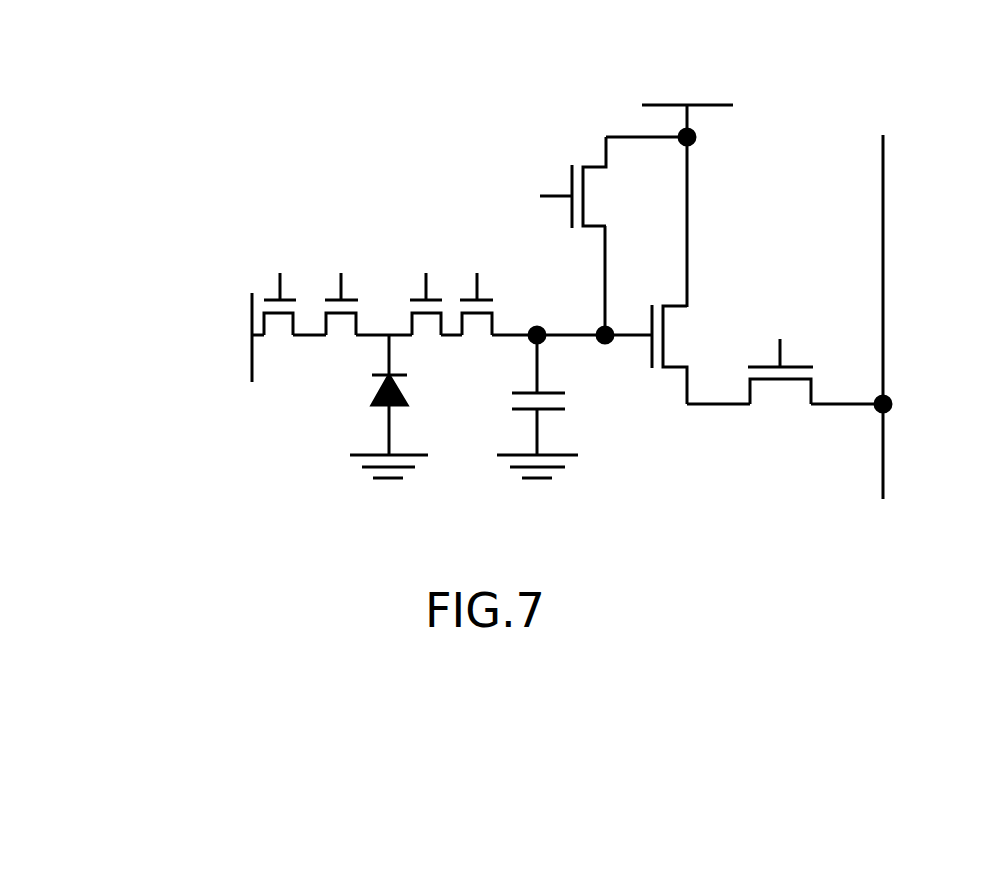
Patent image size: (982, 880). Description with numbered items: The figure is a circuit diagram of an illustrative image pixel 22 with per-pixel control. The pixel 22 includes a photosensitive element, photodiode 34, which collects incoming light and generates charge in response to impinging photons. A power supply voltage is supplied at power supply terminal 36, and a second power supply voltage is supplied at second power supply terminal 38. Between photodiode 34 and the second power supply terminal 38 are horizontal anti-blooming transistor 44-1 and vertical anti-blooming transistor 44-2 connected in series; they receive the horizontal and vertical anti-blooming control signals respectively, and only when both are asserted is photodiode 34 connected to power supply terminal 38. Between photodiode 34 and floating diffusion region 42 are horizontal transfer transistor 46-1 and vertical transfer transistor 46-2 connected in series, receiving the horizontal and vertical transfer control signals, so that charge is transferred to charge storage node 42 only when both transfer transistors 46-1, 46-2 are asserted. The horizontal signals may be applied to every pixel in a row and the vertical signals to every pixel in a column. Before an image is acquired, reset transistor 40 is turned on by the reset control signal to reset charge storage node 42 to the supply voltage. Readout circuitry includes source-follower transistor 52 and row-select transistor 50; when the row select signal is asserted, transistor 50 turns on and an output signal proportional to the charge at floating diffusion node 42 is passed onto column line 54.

The image pixel 22 is at (208, 190).
The photodiode 34 is at (362, 435).
The power supply terminal 36 is at (735, 85).
The second power supply terminal 38 is at (232, 380).
The reset transistor 40 is at (580, 153).
The charge storage node 42 is at (560, 360).
The horizontal anti-blooming transistor 44-1 is at (283, 335).
The vertical anti-blooming transistor 44-2 is at (342, 337).
The horizontal transfer transistor 46-1 is at (427, 328).
The vertical transfer transistor 46-2 is at (482, 335).
The row-select transistor 50 is at (782, 405).
The source-follower transistor 52 is at (656, 300).
The column line 54 is at (885, 273).